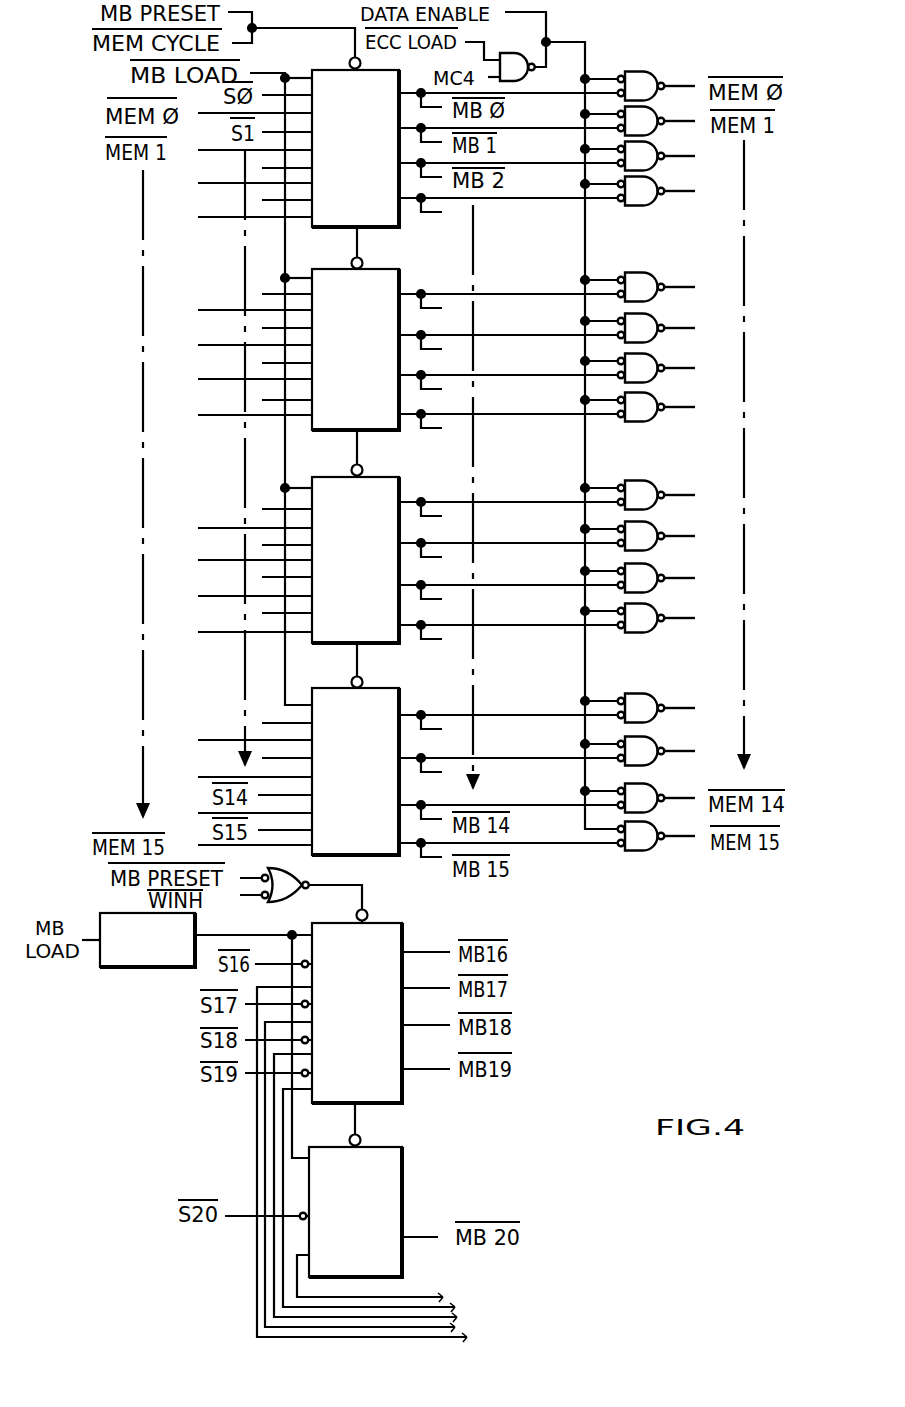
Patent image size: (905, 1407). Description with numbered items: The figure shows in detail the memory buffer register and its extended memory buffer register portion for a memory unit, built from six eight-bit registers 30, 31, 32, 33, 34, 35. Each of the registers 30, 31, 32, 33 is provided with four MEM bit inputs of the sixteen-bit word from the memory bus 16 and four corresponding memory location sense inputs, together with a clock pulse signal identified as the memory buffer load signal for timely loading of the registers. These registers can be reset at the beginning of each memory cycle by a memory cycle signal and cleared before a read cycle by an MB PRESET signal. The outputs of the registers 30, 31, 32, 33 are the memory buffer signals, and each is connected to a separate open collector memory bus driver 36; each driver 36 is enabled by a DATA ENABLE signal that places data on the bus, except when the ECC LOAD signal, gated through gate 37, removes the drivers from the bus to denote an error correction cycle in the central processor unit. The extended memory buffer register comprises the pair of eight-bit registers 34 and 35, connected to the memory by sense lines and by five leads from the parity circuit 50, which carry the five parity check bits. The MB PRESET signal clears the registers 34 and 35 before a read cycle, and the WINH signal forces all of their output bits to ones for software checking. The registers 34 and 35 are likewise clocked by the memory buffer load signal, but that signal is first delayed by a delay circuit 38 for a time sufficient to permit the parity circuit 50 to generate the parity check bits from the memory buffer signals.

The memory bus lines 16 is at (122, 458).
The 8-bit register 30 is at (366, 163).
The 8-bit register 31 is at (366, 360).
The 8-bit register 32 is at (366, 571).
The 8-bit register 33 is at (355, 749).
The 8-bit register 34 is at (366, 1034).
The 8-bit register 35 is at (364, 1216).
The open collector memory bus driver 36 is at (641, 73).
The AND gate 37 is at (525, 53).
The delay circuit 38 is at (117, 967).
The parity circuit 50 is at (513, 1164).